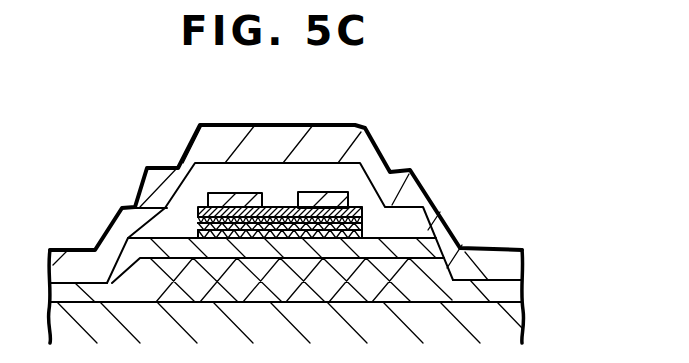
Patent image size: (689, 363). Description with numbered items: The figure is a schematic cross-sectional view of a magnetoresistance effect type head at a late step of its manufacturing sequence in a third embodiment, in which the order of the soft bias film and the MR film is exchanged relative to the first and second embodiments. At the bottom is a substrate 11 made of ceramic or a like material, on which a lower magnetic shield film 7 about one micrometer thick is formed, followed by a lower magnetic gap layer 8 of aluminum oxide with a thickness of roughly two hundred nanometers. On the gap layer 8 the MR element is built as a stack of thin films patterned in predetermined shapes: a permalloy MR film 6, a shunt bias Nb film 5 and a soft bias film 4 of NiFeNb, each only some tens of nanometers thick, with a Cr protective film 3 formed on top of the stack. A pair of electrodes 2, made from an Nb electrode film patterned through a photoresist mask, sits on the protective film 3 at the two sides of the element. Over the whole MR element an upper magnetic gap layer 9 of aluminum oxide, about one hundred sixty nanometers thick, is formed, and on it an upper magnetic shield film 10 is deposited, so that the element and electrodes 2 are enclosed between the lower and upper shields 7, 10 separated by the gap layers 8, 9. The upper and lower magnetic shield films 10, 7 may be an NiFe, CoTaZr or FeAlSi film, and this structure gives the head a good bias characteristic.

The electrodes 2 is at (305, 192).
The Cr protective film 3 is at (368, 212).
The soft bias film 4 is at (365, 234).
The shunt bias Nb film 5 is at (365, 226).
The permalloy MR film 6 is at (365, 219).
The lower magnetic shield film 7 is at (427, 288).
The lower magnetic gap layer 8 is at (519, 291).
The upper magnetic gap layer 9 is at (487, 257).
The upper magnetic shield film 10 is at (357, 119).
The substrate 11 is at (508, 323).